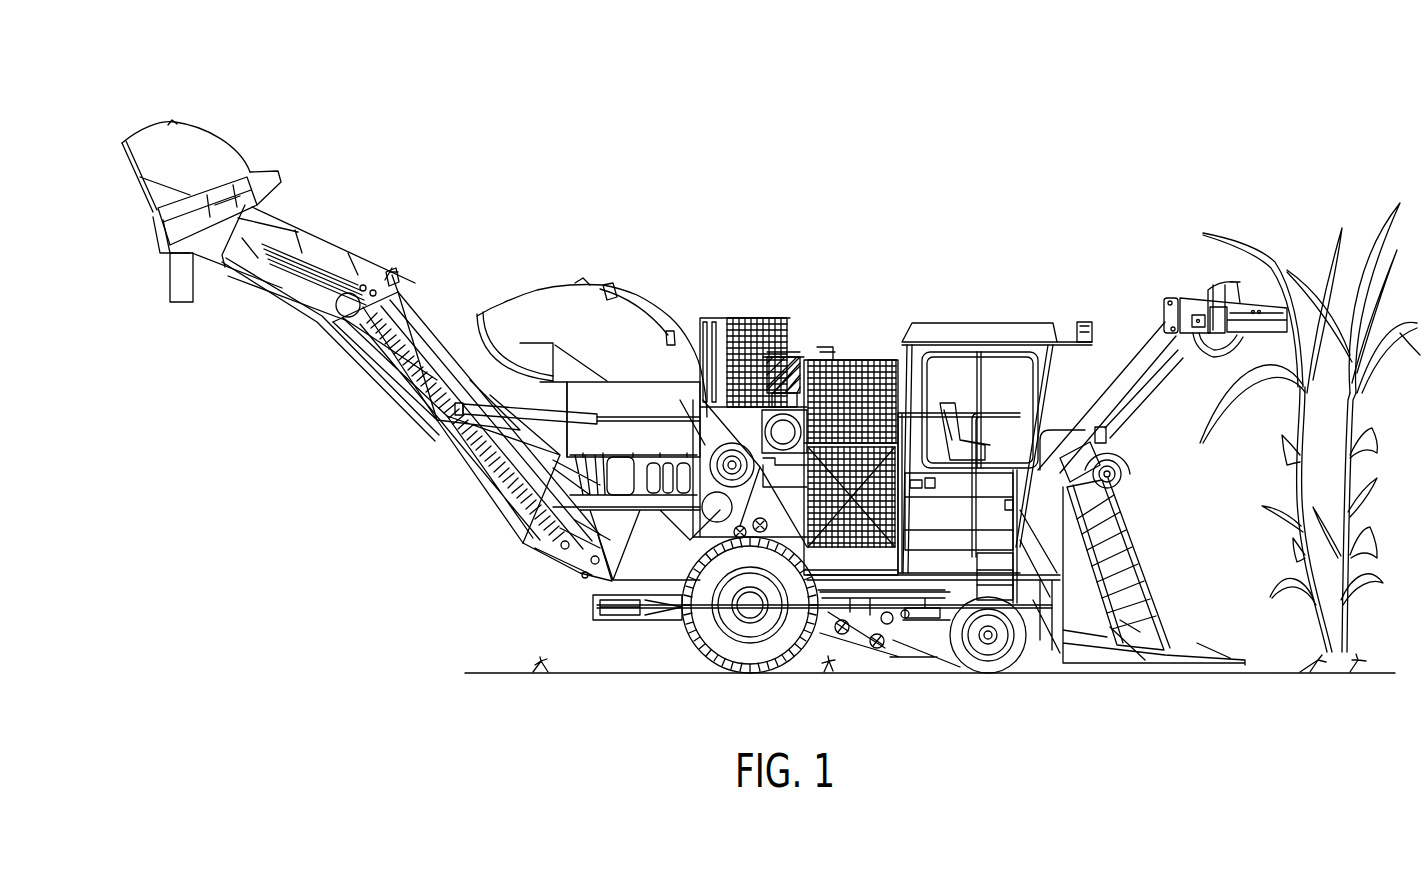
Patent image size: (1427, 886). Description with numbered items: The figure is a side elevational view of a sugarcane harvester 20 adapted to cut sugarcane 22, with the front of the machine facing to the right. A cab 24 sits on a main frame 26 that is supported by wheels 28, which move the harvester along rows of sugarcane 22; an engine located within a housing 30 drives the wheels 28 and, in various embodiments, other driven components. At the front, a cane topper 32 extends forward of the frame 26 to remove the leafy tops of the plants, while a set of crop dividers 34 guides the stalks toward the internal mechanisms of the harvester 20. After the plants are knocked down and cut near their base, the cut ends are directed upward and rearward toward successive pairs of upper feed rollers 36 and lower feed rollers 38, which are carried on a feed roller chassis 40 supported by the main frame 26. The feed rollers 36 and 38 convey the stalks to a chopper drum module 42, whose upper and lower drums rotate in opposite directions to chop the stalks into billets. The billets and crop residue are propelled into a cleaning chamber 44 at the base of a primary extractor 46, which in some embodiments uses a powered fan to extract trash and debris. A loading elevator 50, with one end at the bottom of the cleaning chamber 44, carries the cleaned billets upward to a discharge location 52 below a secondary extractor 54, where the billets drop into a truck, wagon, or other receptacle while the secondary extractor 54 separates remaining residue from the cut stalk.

The sugarcane harvester 20 is at (915, 200).
The sugarcane 22 is at (1360, 195).
The cab 24 is at (985, 328).
The main frame 26 is at (660, 645).
The wheels 28 is at (745, 648).
The housing 30 is at (853, 450).
The cane topper 32 is at (1203, 297).
The crop dividers 34 is at (1085, 640).
The upper feed rollers 36 is at (737, 417).
The lower feed rollers 38 is at (612, 575).
The feed roller chassis 40 is at (817, 633).
The chopper drum module 42 is at (710, 492).
The cleaning chamber 44 is at (607, 478).
The primary extractor 46 is at (512, 278).
The loading elevator 50 is at (375, 432).
The discharge location 52 is at (128, 247).
The secondary extractor 54 is at (205, 147).